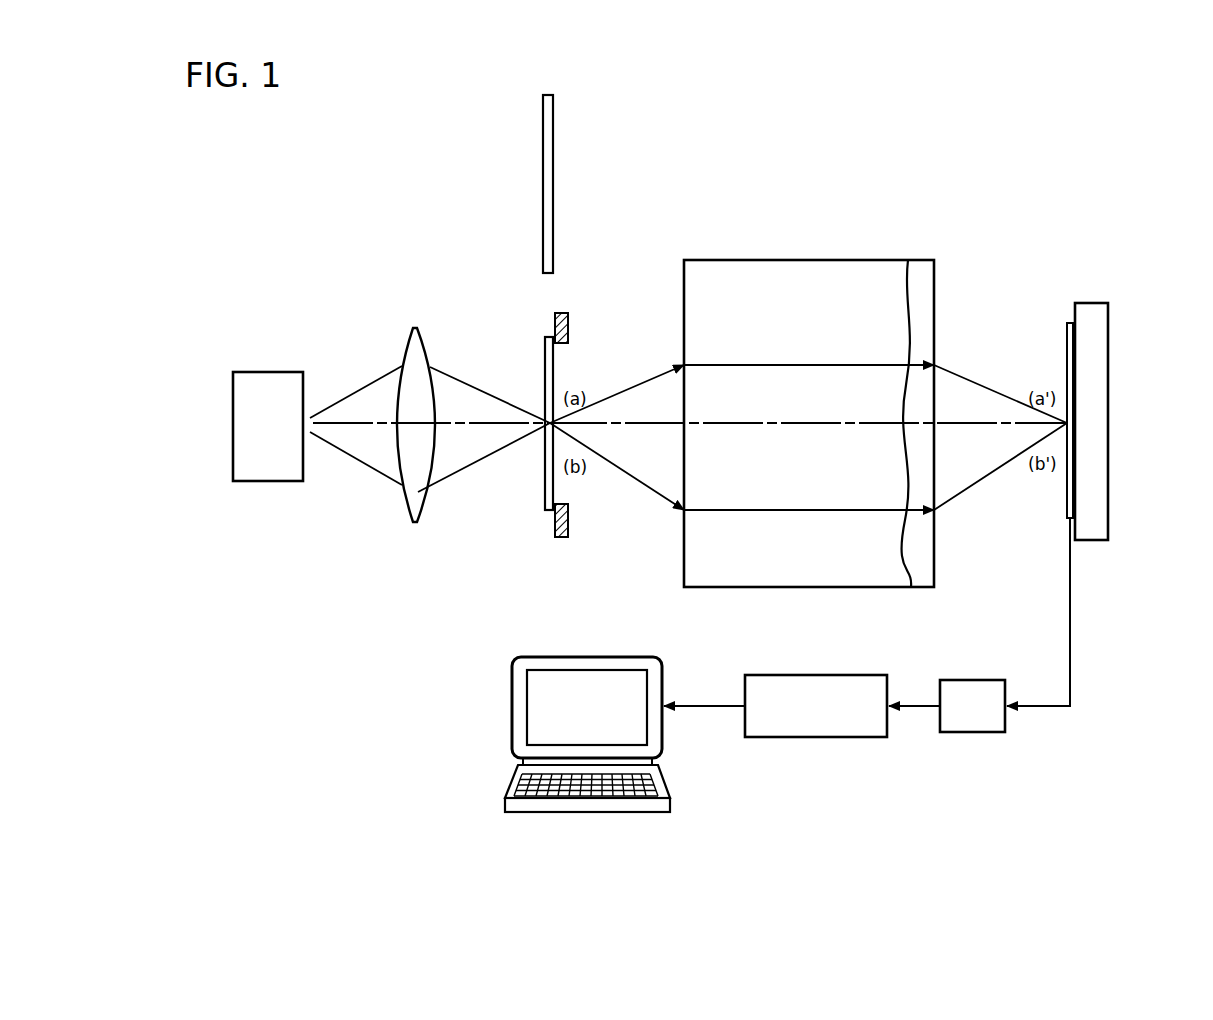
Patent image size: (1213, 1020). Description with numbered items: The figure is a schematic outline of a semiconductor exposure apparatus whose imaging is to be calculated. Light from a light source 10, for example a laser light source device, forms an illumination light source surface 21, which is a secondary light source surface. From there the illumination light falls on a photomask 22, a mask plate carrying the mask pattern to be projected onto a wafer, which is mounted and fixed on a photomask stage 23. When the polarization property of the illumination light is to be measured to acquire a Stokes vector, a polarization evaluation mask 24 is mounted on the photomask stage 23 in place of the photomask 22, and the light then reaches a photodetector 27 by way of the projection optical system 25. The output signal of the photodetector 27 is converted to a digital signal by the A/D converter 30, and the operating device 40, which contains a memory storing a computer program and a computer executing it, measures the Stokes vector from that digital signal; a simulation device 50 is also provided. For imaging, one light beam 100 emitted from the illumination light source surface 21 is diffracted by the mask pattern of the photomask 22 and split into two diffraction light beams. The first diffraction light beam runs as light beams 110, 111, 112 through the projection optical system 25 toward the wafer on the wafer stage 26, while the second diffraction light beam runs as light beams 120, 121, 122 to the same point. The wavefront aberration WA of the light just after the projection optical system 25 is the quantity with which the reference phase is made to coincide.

The light source 10 is at (268, 372).
The illumination light source surface 21 is at (415, 328).
The light beam 100 is at (477, 467).
The photomask 22 is at (545, 350).
The photomask stage 23 is at (568, 318).
The polarization evaluation mask 24 is at (543, 158).
The projection optical system 25 is at (798, 260).
The wavefront aberration WA is at (918, 280).
The light beam 110 is at (640, 380).
The light beam 111 is at (801, 365).
The light beam 112 is at (968, 380).
The light beam 120 is at (640, 481).
The light beam 121 is at (800, 510).
The light beam 122 is at (975, 483).
The wafer stage 26 is at (1108, 375).
The photodetector 27 is at (1068, 323).
The A/D converter 30 is at (972, 732).
The operating device 40 is at (820, 737).
The simulation device 50 is at (589, 657).